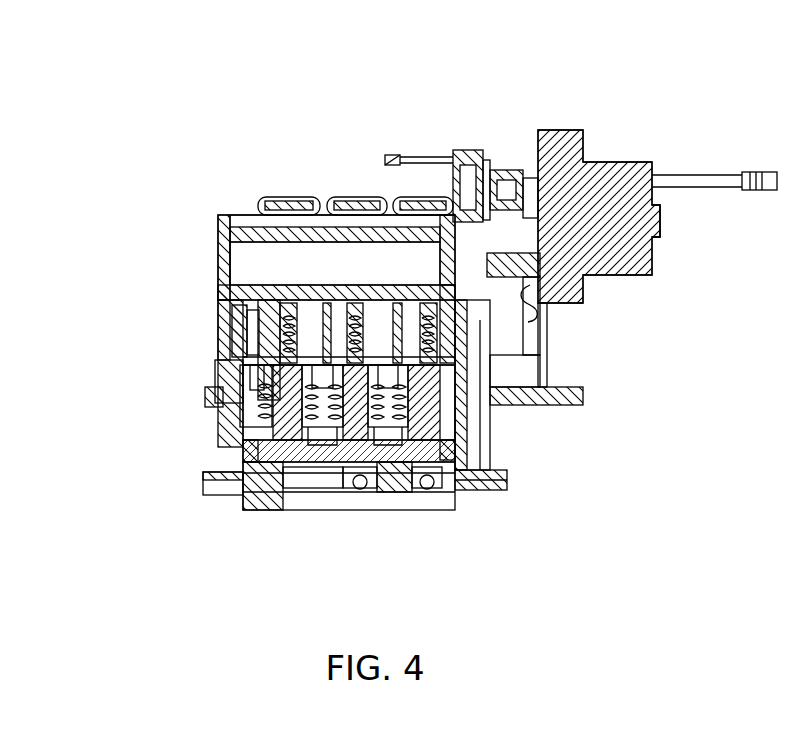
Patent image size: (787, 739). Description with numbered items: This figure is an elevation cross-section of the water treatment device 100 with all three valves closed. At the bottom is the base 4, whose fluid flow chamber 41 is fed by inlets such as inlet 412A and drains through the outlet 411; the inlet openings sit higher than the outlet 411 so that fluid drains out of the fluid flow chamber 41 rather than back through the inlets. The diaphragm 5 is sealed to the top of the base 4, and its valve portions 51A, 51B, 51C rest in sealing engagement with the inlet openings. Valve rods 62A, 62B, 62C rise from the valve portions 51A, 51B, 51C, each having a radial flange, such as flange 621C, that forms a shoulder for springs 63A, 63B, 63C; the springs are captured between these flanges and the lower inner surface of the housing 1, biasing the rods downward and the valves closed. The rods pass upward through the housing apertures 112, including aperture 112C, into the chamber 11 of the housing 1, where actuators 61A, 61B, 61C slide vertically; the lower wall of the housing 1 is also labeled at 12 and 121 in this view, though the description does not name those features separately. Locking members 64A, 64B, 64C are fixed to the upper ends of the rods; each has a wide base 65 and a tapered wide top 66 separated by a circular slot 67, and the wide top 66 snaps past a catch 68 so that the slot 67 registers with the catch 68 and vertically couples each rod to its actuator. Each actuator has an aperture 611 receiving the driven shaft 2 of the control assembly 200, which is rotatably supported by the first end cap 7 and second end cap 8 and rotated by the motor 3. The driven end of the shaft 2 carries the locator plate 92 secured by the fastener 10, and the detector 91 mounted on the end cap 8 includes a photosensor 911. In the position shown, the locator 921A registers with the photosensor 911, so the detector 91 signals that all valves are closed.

The water treatment device 100 is at (150, 125).
The control assembly 200 is at (660, 130).
The housing 1 is at (200, 400).
The driven shaft 2 is at (240, 227).
The motor 3 is at (591, 160).
The base 4 is at (350, 510).
The diaphragm 5 is at (243, 450).
The first end cap 7 is at (222, 218).
The second end cap 8 is at (457, 158).
The fastener 10 is at (541, 296).
The chamber 11 is at (240, 290).
The piston block 12 is at (243, 433).
The fluid flow chamber 41 is at (393, 475).
The first valve portion 51A is at (297, 467).
The second valve portion 51B is at (355, 475).
The third valve portion 51C is at (427, 478).
The first actuator 61A is at (313, 192).
The second actuator 61B is at (353, 192).
The third actuator 61C is at (427, 192).
The first valve rod 62A is at (245, 428).
The second valve rod 62B is at (370, 465).
The third valve rod 62C is at (458, 390).
The first spring 63A is at (206, 395).
The second spring 63B is at (323, 457).
The third spring 63C is at (458, 415).
The first locking member 64A is at (300, 335).
The second locking member 64B is at (362, 345).
The third locking member 64C is at (440, 325).
The wide base 65 is at (245, 345).
The wide top 66 is at (240, 313).
The circular slot 67 is at (245, 335).
The catch 68 is at (288, 318).
The detector 91 is at (485, 150).
The locator plate 92 is at (526, 186).
The housing flange 112 is at (220, 378).
The third housing aperture 112C is at (542, 358).
The block foot 121 is at (249, 462).
The outlet 411 is at (476, 492).
The first inlet 412A is at (217, 495).
The aperture 611 is at (342, 141).
The third flange 621C is at (458, 450).
The photosensor 911 is at (507, 172).
The first locator 921A is at (656, 216).